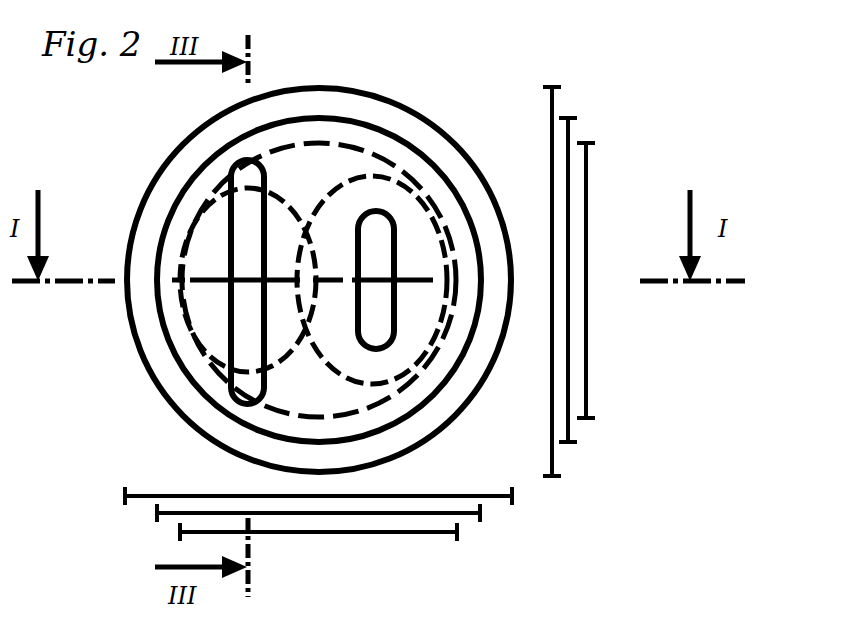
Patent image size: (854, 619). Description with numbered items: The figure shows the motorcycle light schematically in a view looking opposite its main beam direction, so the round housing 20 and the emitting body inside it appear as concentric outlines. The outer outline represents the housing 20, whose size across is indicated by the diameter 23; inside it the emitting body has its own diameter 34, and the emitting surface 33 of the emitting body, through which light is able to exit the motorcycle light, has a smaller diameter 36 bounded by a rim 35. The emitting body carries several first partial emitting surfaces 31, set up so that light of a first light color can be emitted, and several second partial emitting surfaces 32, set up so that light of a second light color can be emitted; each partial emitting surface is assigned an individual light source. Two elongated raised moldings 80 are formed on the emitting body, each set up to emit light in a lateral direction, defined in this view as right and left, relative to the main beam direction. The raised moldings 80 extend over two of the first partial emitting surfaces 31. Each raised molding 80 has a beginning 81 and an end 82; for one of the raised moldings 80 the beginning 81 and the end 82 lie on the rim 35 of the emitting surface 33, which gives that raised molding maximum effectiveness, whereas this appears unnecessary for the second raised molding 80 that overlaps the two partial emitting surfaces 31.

The housing 20 is at (157, 343).
The diameter 23 is at (553, 463).
The first partial emitting surface 31 is at (377, 153).
The second partial emitting surface 32 is at (213, 237).
The emitting surface 33 is at (222, 186).
The diameter 34 is at (570, 434).
The rim 35 is at (178, 285).
The diameter 36 is at (586, 345).
The raised molding 80 is at (238, 253).
The beginning 81 is at (252, 157).
The end 82 is at (388, 352).